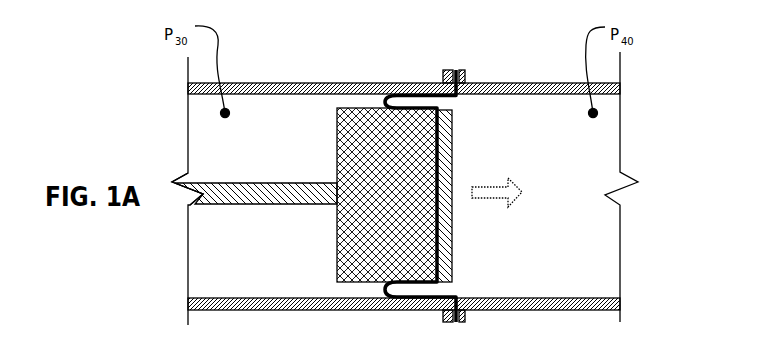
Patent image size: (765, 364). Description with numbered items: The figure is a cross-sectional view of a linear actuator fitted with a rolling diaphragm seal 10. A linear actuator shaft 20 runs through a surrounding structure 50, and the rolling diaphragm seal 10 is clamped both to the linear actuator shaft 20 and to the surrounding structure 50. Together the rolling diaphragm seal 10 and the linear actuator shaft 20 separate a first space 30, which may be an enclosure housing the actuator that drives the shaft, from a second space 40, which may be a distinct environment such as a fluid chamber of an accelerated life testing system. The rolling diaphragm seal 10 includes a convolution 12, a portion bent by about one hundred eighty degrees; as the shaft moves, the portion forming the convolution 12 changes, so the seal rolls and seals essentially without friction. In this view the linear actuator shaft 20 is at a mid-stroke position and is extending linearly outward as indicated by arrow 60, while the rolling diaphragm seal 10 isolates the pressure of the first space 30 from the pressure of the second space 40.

The rolling diaphragm seal 10 is at (359, 186).
The convolution 12 is at (379, 97).
The linear actuator shaft 20 is at (302, 161).
The first space 30 is at (214, 191).
The second space 40 is at (595, 187).
The surrounding structure 50 is at (302, 83).
The arrow 60 is at (490, 198).